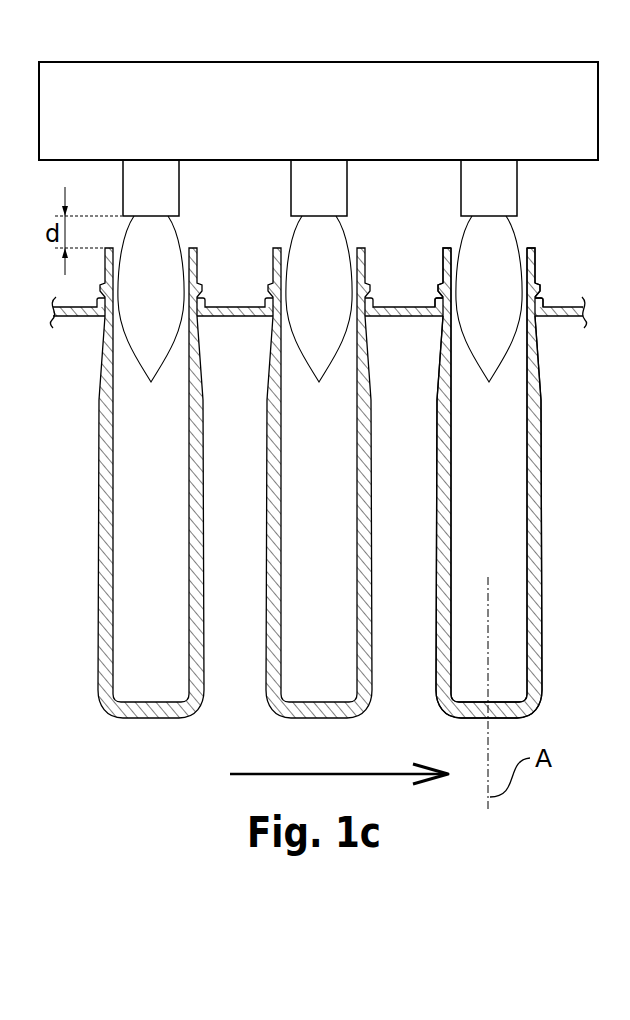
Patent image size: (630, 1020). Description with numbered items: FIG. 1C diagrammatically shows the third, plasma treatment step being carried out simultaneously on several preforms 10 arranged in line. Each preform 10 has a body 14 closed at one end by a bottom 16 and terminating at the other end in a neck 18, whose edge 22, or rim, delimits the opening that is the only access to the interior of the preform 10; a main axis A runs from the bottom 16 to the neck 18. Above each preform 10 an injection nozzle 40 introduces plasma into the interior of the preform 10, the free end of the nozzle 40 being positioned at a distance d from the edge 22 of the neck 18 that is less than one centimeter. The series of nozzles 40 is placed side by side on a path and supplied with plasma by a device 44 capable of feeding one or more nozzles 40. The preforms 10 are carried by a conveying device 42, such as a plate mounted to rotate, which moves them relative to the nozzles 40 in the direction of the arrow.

The preform 10 is at (541, 578).
The body 14 is at (537, 510).
The bottom 16 is at (533, 720).
The neck 18 is at (533, 264).
The edge of the neck 22 is at (531, 247).
The injection nozzle 40 is at (490, 184).
The conveying device 42 is at (552, 318).
The plasma production device 44 is at (400, 102).